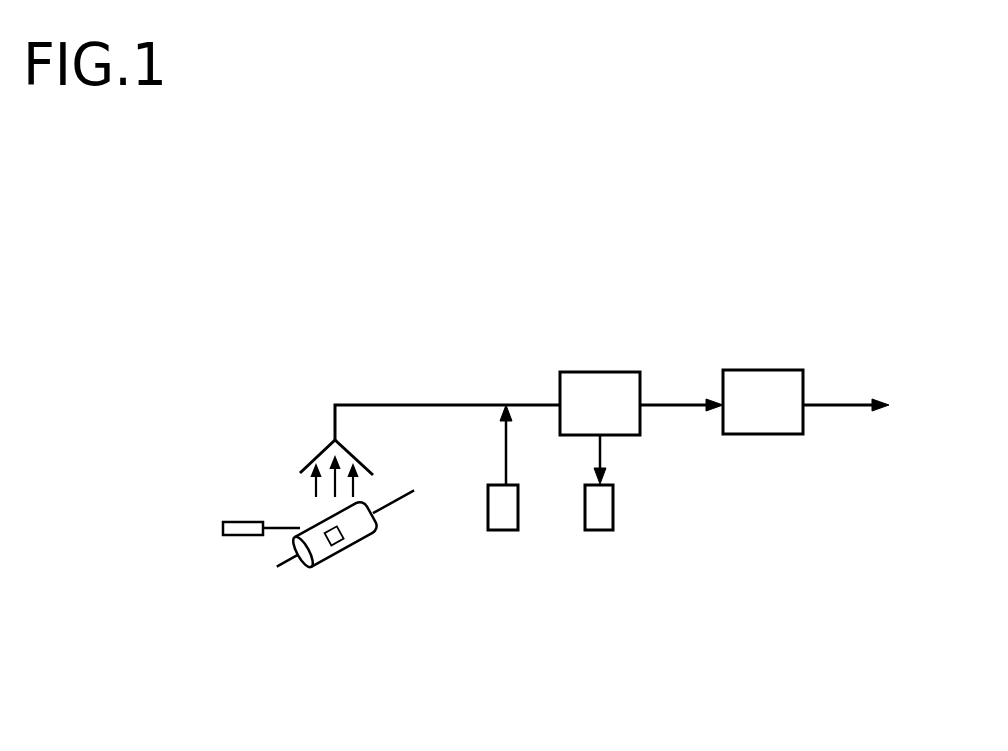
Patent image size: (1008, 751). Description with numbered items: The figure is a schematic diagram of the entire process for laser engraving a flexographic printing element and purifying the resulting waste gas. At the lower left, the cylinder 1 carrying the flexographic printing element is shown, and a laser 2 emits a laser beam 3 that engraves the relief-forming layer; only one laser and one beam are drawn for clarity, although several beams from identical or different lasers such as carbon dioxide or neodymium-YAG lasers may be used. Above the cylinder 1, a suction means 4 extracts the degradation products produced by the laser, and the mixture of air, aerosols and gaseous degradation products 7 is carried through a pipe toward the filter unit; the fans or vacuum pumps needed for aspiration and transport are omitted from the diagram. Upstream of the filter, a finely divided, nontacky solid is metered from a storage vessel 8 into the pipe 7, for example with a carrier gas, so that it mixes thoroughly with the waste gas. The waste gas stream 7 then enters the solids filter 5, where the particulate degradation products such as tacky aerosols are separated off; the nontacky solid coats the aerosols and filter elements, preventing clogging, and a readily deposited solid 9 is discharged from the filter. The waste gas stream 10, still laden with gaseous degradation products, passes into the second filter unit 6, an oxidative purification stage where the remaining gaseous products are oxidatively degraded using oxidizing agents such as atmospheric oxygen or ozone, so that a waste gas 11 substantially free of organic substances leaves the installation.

The cylinder 1 is at (347, 550).
The laser 2 is at (233, 537).
The laser beam 3 is at (290, 527).
The suction means 4 is at (313, 458).
The solids filter 5 is at (600, 370).
The second filter unit 6 is at (763, 369).
The waste gas stream 7 is at (423, 404).
The storage vessel 8 is at (500, 530).
The deposited solid 9 is at (598, 530).
The waste gas stream laden with gaseous degradation products 10 is at (682, 403).
The waste gas 11 is at (860, 406).